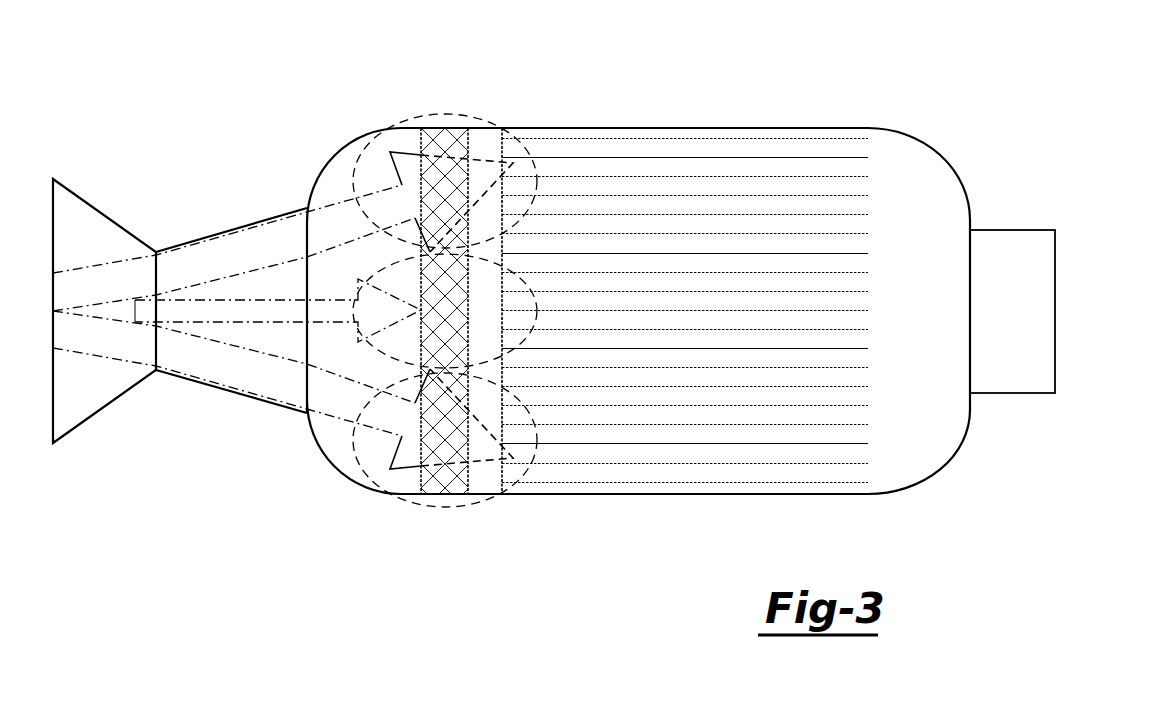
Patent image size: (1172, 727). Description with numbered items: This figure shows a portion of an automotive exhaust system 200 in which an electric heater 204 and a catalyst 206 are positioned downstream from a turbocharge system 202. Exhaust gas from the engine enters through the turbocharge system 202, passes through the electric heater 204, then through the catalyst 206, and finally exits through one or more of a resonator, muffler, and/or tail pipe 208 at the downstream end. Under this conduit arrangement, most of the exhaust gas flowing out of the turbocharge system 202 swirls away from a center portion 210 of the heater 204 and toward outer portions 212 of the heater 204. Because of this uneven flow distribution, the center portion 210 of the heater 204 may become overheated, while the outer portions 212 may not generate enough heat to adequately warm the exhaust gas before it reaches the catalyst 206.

The automotive exhaust system 200 is at (995, 82).
The turbocharge system 202 is at (102, 408).
The electric heater 204 is at (420, 178).
The catalyst 206 is at (778, 167).
The resonator, muffler, and/or tail pipe 208 is at (1028, 268).
The center portion 210 is at (528, 291).
The outer portions 212 is at (397, 122).